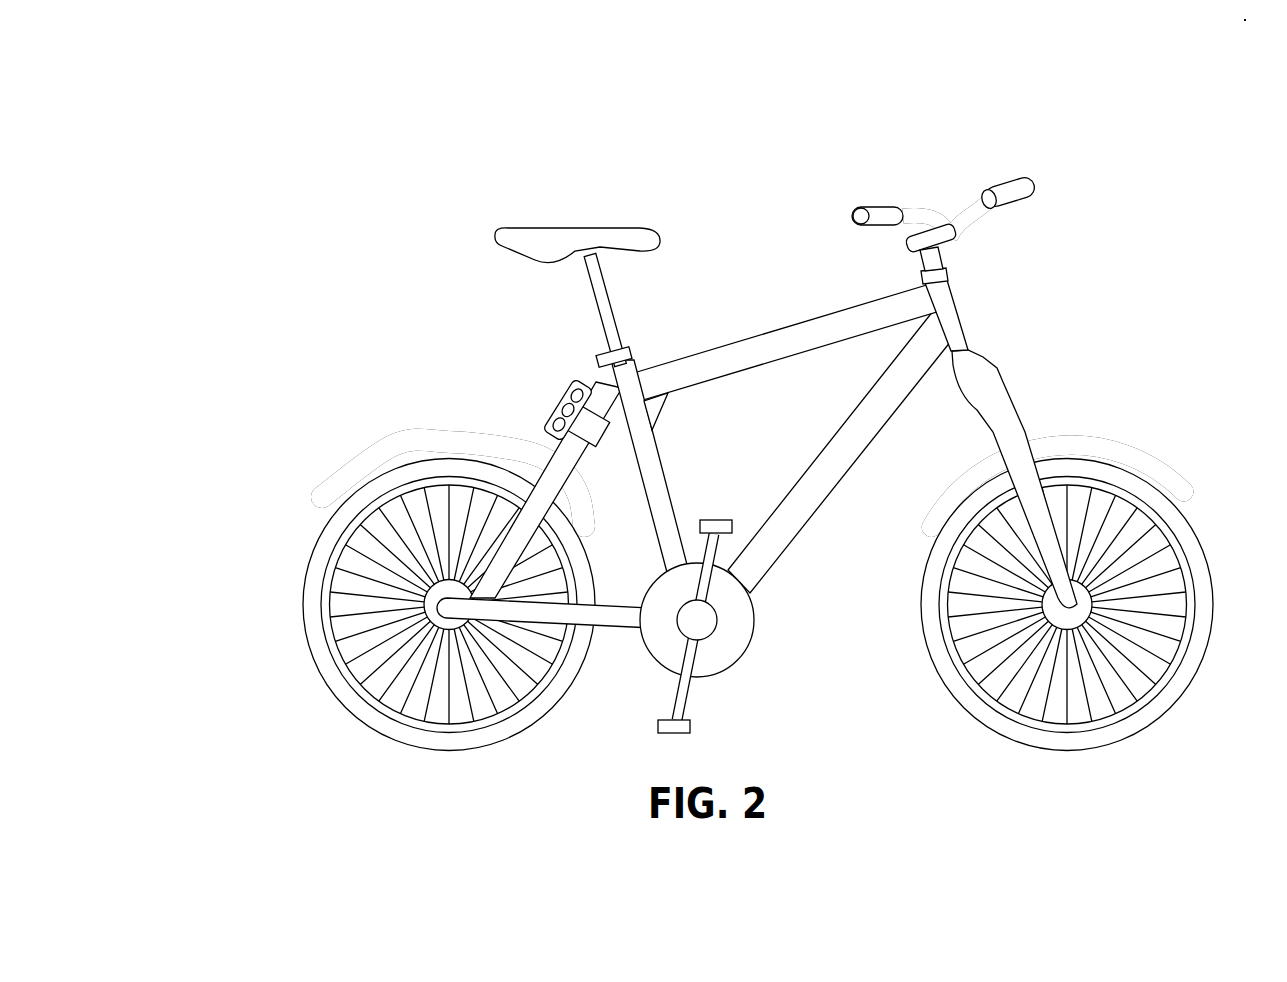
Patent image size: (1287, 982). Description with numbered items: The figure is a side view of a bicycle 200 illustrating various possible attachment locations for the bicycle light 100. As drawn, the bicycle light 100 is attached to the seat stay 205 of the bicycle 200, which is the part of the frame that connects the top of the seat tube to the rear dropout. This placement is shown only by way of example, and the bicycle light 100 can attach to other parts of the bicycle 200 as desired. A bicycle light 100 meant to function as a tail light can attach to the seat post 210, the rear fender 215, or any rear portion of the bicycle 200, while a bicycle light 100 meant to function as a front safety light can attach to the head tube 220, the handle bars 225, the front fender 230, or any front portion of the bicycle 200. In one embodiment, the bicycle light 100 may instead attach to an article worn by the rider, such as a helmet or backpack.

The bicycle 200 is at (297, 160).
The bicycle light 100 is at (553, 390).
The seat stay 205 is at (553, 462).
The seat post 210 is at (600, 307).
The rear fender 215 is at (343, 470).
The head tube 220 is at (960, 303).
The handle bars 225 is at (1008, 187).
The front fender 230 is at (1112, 440).